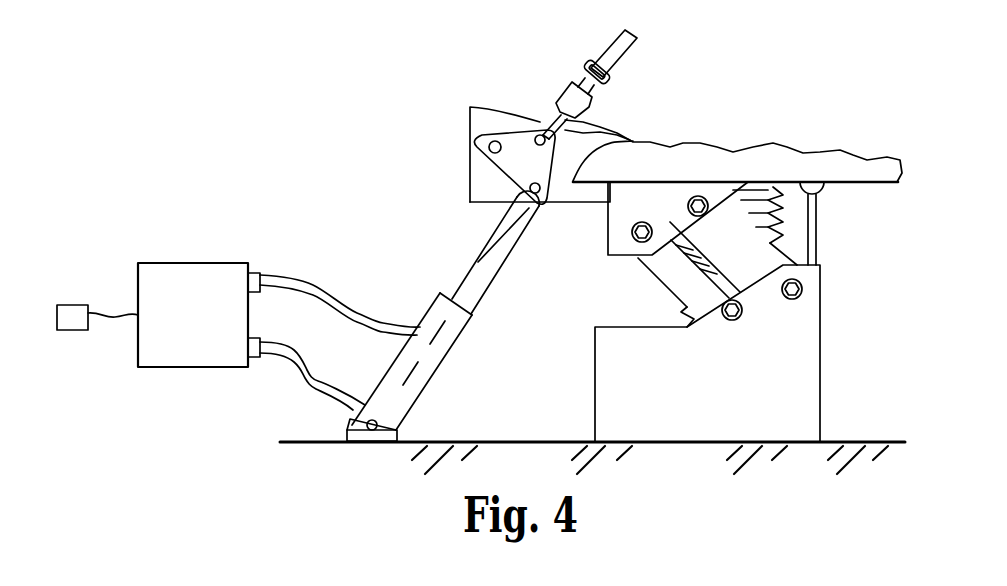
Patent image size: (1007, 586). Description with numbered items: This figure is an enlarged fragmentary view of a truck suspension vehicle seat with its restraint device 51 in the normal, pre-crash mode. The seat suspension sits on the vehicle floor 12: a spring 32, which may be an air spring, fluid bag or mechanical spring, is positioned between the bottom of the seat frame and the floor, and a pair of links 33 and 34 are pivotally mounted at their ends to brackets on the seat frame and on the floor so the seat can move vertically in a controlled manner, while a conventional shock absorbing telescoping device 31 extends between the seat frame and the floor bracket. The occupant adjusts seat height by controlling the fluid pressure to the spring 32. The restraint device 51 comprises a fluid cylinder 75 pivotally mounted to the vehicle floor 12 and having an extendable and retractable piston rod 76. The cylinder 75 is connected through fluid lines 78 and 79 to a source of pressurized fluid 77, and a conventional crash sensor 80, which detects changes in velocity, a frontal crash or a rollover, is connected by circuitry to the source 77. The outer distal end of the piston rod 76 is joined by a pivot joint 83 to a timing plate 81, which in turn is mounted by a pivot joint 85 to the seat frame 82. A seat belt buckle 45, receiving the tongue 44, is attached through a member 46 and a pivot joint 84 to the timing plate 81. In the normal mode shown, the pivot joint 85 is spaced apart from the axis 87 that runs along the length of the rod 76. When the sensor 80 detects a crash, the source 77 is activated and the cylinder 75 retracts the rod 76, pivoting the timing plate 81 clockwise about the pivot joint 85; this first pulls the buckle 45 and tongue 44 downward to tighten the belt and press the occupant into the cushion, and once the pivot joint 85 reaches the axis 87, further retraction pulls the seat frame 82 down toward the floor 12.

The vehicle floor 12 is at (507, 441).
The shock absorbing telescoping device 31 is at (818, 222).
The spring 32 is at (748, 280).
The link 33 is at (667, 270).
The link 34 is at (738, 225).
The tongue 44 is at (594, 63).
The seat belt buckle 45 is at (569, 94).
The member 46 is at (605, 128).
The restraint device 51 is at (284, 185).
The fluid cylinder 75 is at (427, 390).
The piston rod 76 is at (508, 247).
The source of pressurized fluid 77 is at (199, 329).
The fluid line 78 is at (298, 279).
The fluid line 79 is at (318, 379).
The crash sensor 80 is at (70, 305).
The timing plate 81 is at (512, 128).
The seat frame 82 is at (593, 197).
The pivot joint 83 is at (547, 205).
The pivot joint 84 is at (523, 120).
The pivot joint 85 is at (550, 117).
The axis 87 is at (488, 252).